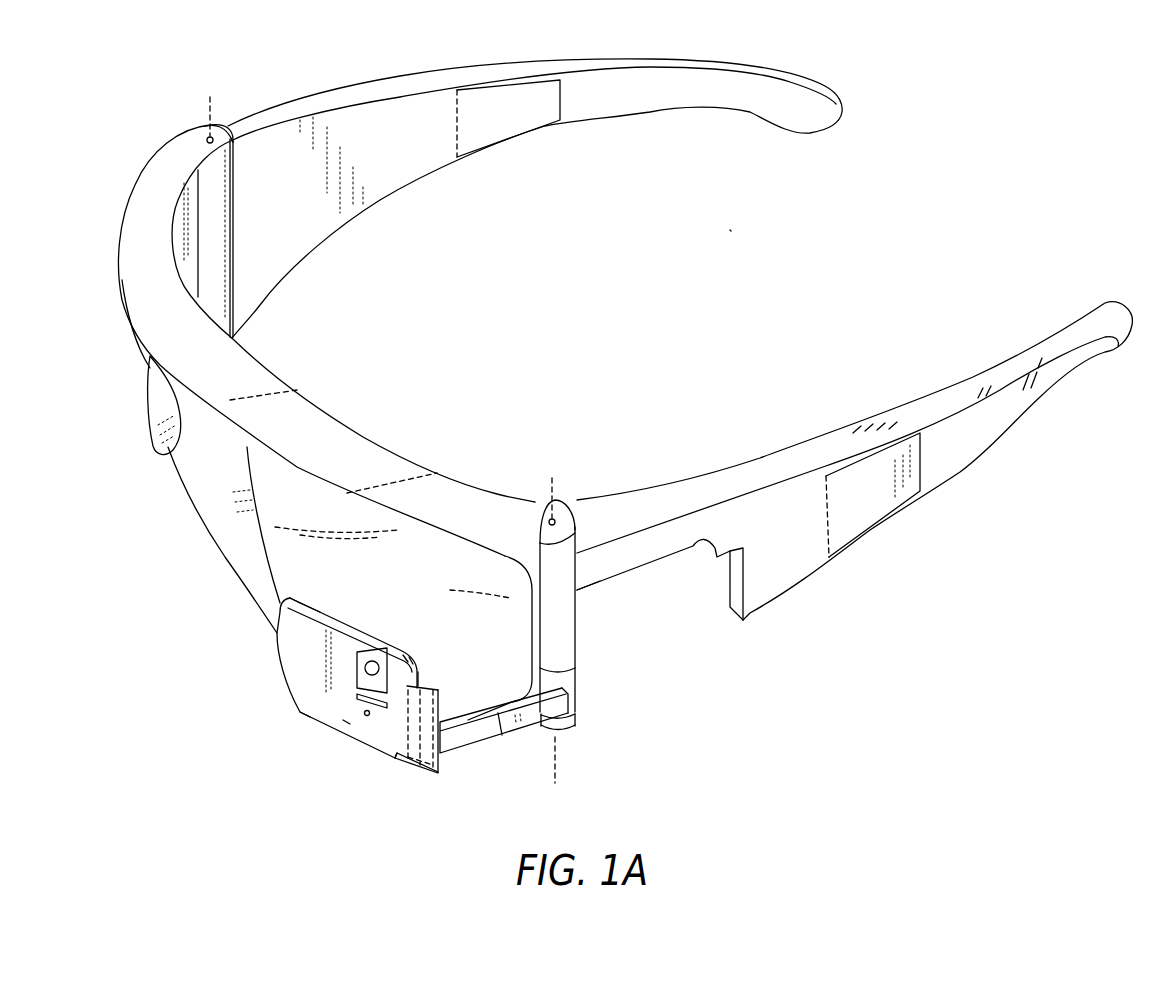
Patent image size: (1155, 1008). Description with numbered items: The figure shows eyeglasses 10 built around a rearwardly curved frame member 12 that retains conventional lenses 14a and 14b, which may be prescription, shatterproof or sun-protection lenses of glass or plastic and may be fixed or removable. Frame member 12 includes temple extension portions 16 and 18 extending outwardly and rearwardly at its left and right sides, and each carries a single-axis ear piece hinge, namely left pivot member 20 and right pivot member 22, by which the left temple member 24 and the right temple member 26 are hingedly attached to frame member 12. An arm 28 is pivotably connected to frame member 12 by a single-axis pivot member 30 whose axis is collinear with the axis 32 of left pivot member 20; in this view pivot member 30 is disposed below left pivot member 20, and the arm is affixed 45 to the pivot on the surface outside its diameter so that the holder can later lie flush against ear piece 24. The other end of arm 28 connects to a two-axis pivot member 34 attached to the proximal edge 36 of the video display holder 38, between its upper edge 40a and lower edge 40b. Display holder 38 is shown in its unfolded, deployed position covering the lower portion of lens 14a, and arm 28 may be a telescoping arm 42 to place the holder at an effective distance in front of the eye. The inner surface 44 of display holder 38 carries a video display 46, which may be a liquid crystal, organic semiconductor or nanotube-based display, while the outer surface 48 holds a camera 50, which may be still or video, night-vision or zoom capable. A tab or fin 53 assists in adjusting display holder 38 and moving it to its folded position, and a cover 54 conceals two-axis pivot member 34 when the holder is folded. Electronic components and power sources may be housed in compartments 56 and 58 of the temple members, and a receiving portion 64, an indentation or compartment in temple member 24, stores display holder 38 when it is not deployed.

The eyeglasses 10 is at (760, 293).
The frame member 12 is at (465, 512).
The lens 14a is at (278, 510).
The lens 14b is at (150, 372).
The temple extension portion 16 is at (563, 502).
The temple extension portion 18 is at (218, 123).
The left pivot member 20 is at (544, 616).
The right pivot member 22 is at (233, 270).
The left temple member 24 is at (777, 540).
The right temple member 26 is at (397, 148).
The arm 28 is at (461, 712).
The single-axis pivot member 30 is at (578, 682).
The axis 32 is at (555, 477).
The two-axis pivot member 34 is at (416, 713).
The proximal edge 36 is at (418, 670).
The video display holder 38 is at (282, 646).
The upper edge 40a is at (317, 607).
The lower edge 40b is at (302, 717).
The telescoping arm 42 is at (495, 737).
The inner surface 44 is at (362, 630).
The affixment of arm to pivot 45 is at (577, 710).
The video display 46 is at (302, 593).
The outer surface 48 is at (343, 720).
The camera 50 is at (347, 655).
The tab or fin 53 is at (393, 767).
The cover 54 is at (430, 690).
The compartment 56 is at (849, 503).
The compartment 58 is at (495, 118).
The receiving portion 64 is at (630, 630).